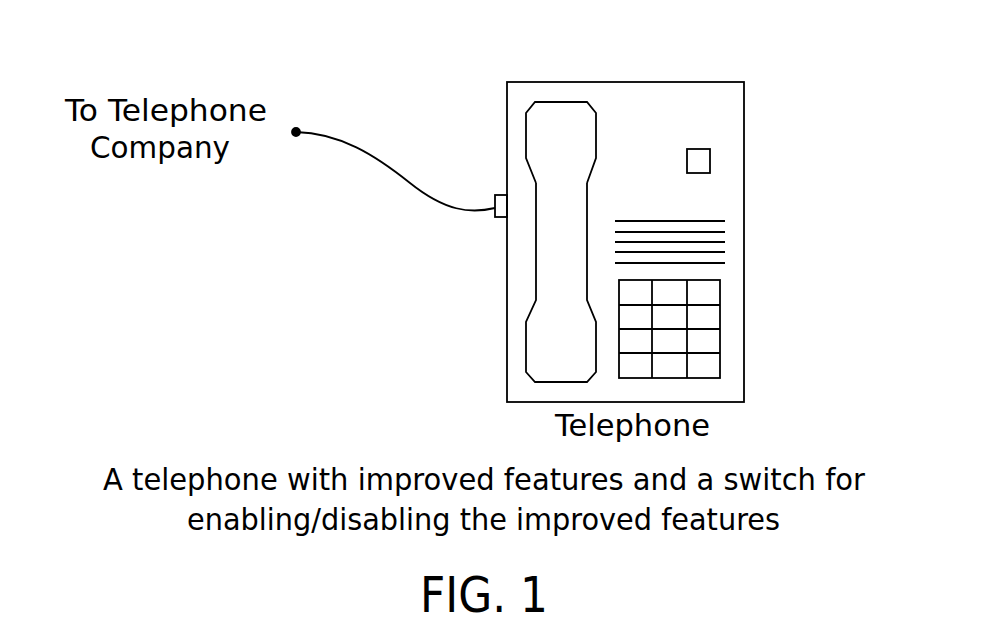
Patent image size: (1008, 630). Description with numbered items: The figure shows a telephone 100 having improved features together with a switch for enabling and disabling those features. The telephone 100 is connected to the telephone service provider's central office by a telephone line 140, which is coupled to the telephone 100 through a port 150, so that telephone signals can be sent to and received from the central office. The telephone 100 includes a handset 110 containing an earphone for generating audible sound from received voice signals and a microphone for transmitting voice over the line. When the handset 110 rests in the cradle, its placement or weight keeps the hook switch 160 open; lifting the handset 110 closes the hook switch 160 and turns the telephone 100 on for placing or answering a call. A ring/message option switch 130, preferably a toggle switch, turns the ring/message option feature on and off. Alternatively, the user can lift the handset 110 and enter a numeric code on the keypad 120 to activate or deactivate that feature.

The telephone 100 is at (744, 132).
The handset 110 is at (546, 230).
The keypad 120 is at (703, 317).
The ring/message option switch 130 is at (700, 150).
The telephone line 140 is at (397, 169).
The port 150 is at (495, 218).
The hook switch 160 is at (557, 118).